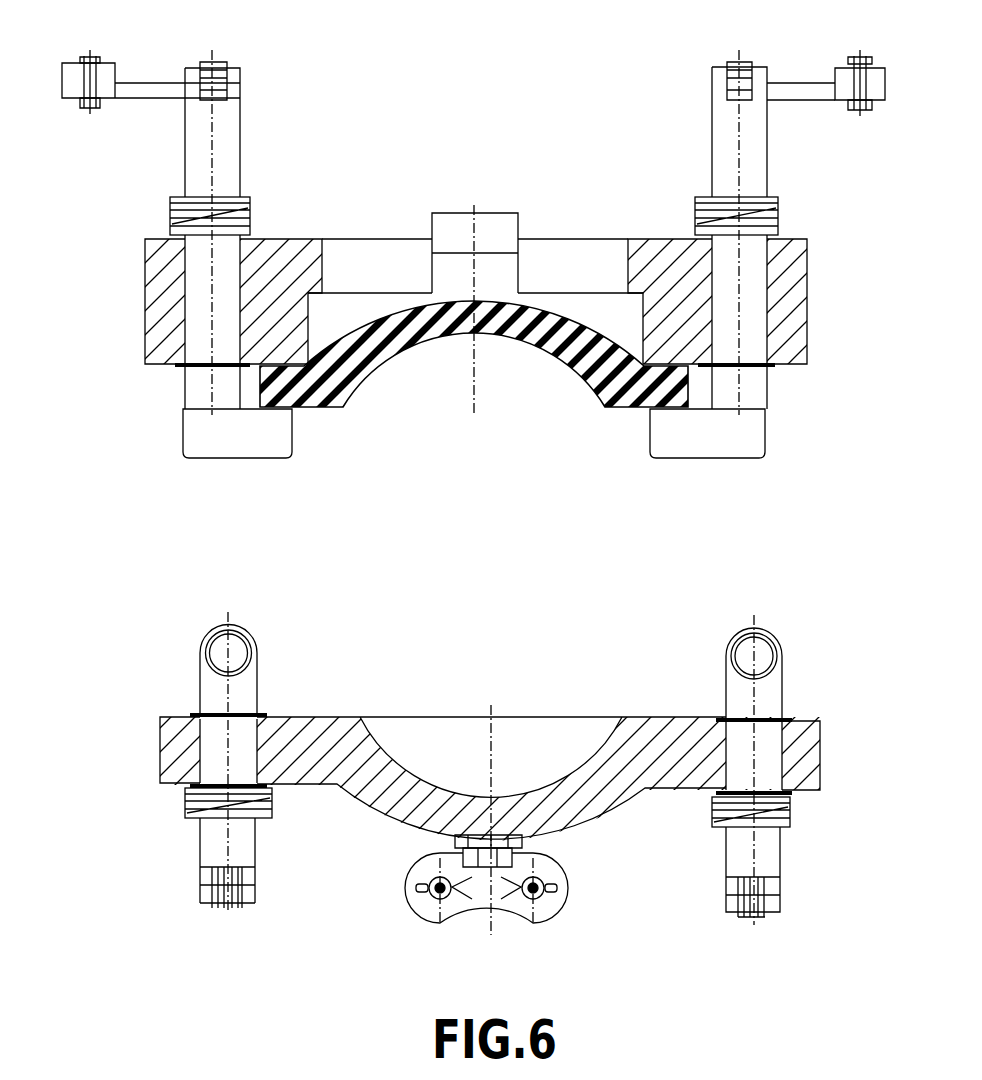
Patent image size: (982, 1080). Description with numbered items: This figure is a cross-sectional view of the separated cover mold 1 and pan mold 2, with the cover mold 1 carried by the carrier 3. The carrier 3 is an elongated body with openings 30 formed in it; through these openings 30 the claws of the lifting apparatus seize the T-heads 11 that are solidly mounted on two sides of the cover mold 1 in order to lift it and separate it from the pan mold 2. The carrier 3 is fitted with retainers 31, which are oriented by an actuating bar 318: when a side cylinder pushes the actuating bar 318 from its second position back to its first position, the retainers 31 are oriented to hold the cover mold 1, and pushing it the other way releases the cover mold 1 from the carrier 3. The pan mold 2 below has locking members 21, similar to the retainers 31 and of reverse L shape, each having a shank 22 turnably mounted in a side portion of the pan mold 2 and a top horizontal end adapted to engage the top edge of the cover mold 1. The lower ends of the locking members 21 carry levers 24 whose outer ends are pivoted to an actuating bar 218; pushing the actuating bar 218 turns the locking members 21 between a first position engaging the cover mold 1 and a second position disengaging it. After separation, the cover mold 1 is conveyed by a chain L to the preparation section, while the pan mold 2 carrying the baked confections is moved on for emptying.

The cover mold 1 is at (640, 398).
The carrier 3 is at (648, 240).
The openings 30 is at (362, 254).
The T-heads 11 is at (483, 246).
The retainers 31 is at (760, 187).
The actuating bar 318 is at (877, 72).
The pan mold 2 is at (645, 747).
The locking members 21 is at (775, 683).
The shank 22 is at (763, 758).
The levers 24 is at (730, 880).
The actuating bar 218 is at (728, 905).
The bracket L is at (517, 910).